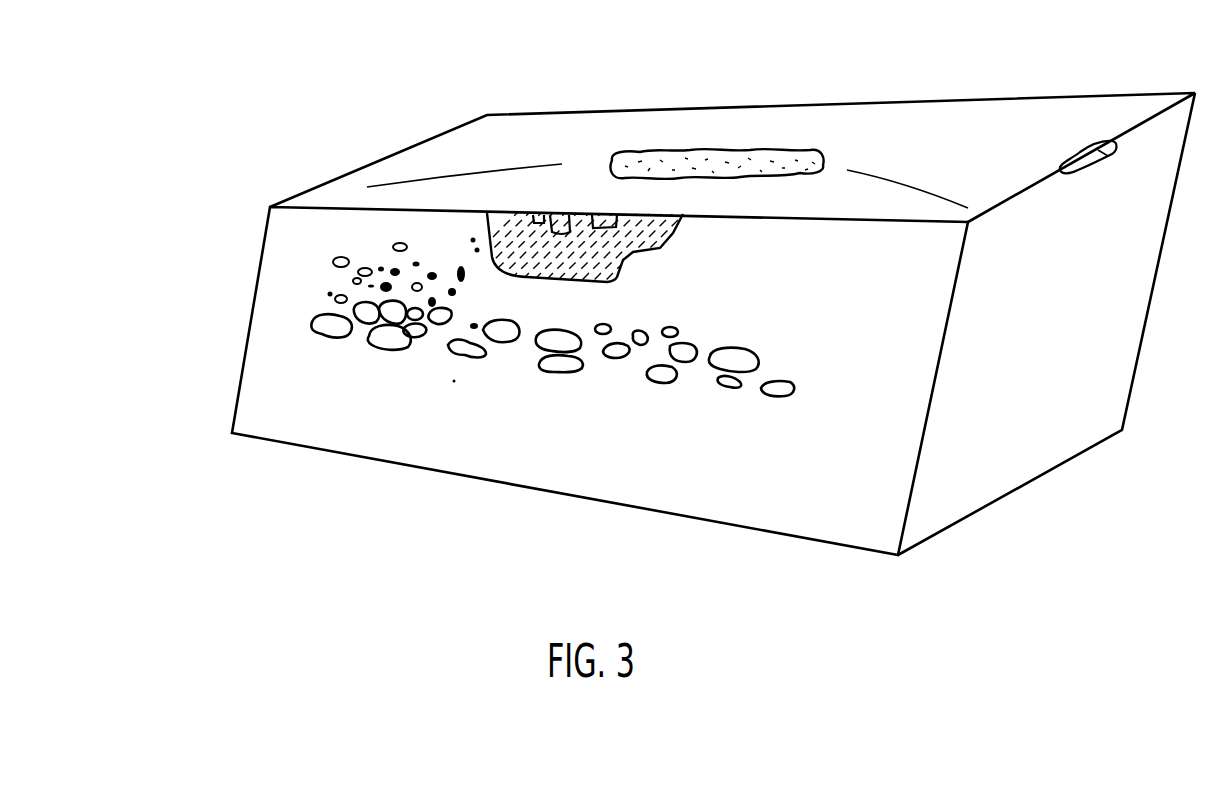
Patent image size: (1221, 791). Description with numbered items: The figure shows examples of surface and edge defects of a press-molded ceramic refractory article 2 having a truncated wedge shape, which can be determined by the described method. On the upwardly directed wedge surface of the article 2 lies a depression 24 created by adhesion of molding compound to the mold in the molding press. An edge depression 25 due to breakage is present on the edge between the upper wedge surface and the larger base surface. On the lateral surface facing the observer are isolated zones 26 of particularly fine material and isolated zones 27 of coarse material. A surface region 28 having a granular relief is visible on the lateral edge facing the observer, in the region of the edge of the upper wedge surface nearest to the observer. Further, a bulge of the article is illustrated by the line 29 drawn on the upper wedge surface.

The test body 2 is at (330, 471).
The depression 24 is at (750, 148).
The edge depression 25 is at (1112, 157).
The isolated zones of particularly fine material 26 is at (340, 249).
The isolated zones of coarse material 27 is at (422, 345).
The surface region having a granular relief 28 is at (577, 214).
The line 29 is at (520, 166).